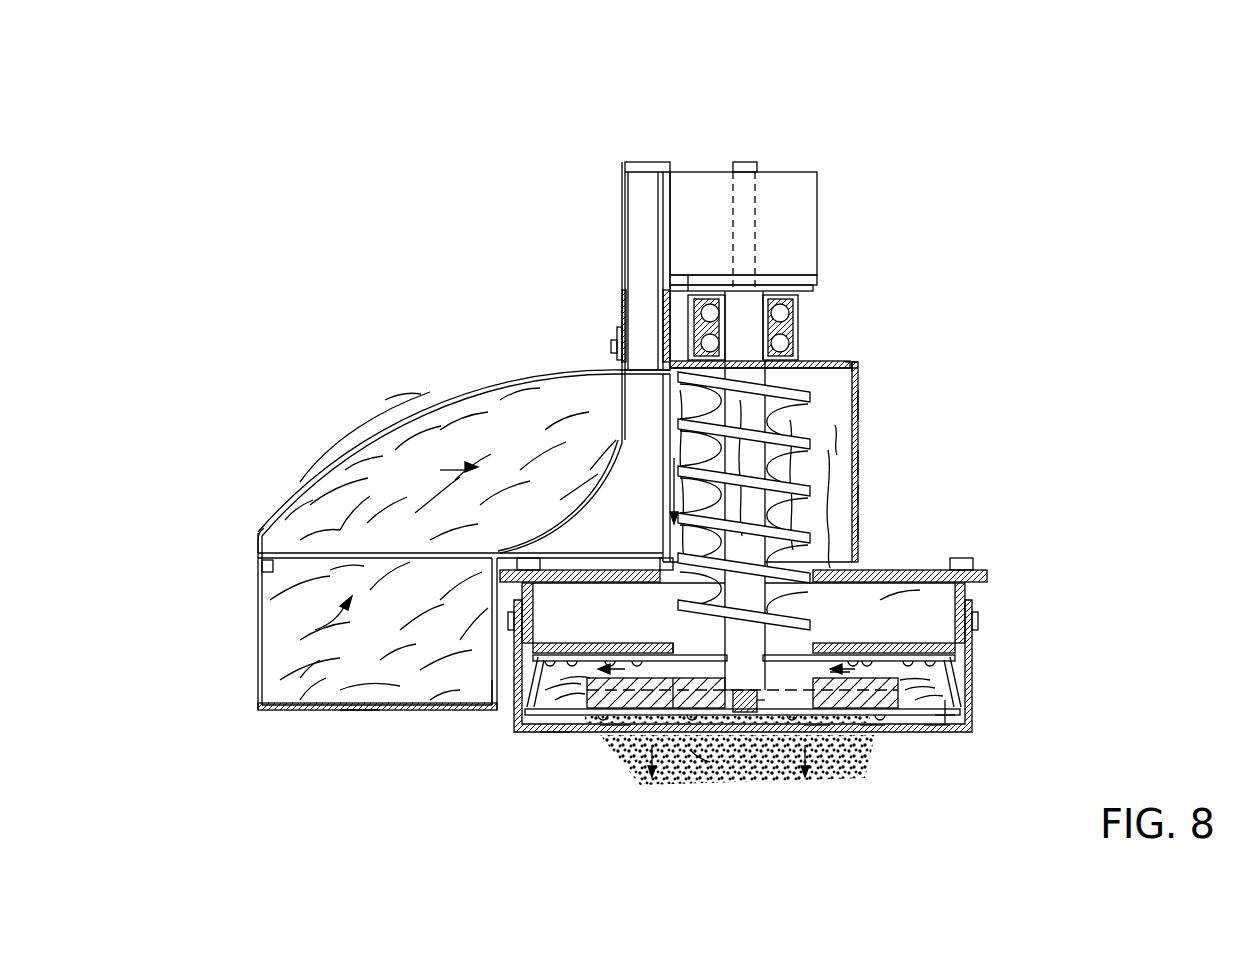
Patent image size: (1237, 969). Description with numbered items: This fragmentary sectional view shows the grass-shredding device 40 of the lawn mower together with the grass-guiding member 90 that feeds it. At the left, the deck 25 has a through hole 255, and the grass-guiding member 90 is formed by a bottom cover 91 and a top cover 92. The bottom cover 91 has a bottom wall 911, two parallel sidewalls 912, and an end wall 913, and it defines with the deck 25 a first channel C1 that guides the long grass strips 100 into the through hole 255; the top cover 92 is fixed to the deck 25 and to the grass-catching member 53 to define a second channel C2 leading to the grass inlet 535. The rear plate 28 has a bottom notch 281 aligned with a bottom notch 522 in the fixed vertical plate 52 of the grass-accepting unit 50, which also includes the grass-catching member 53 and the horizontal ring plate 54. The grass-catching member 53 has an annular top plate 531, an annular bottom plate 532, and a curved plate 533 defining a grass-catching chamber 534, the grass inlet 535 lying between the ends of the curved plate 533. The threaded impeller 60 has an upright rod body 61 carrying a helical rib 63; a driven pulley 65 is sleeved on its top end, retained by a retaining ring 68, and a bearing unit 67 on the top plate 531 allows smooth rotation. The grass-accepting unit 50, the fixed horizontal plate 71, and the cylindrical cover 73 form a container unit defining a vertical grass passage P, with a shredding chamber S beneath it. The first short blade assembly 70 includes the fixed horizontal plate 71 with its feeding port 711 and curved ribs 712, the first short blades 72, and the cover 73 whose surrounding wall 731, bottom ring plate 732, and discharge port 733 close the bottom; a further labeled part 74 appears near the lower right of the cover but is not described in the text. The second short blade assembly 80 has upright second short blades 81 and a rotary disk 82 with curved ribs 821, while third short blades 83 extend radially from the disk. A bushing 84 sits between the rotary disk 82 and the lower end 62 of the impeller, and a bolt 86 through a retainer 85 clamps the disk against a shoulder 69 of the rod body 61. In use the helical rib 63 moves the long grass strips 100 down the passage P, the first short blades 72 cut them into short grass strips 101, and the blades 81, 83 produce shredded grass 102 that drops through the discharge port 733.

The deck 25 is at (262, 572).
The rear plate 28 is at (622, 178).
The grass-shredding device 40 is at (988, 556).
The grass-accepting unit 50 is at (866, 380).
The fixed vertical plate 52 is at (668, 162).
The grass-catching member 53 is at (860, 404).
The horizontal ring plate 54 is at (985, 575).
The threaded impeller 60 is at (810, 378).
The rod body 61 is at (750, 345).
The lower end 62 is at (785, 690).
The helical rib 63 is at (845, 440).
The driven pulley 65 is at (818, 200).
The bearing unit 67 is at (800, 287).
The retaining ring 68 is at (757, 170).
The shoulder 69 is at (725, 700).
The first short blade assembly 70 is at (975, 600).
The fixed horizontal plate 71 is at (975, 614).
The first short blades 72 is at (888, 625).
The cylindrical cover 73 is at (975, 700).
The outlet plate 74 is at (948, 735).
The second short blade assembly 80 is at (935, 735).
The second short blades 81 is at (960, 703).
The rotary disk 82 is at (870, 735).
The third short blades 83 is at (975, 730).
The bushing 84 is at (815, 730).
The retainer 85 is at (760, 715).
The bolt 86 is at (745, 715).
The grass-guiding member 90 is at (278, 501).
The bottom cover 91 is at (322, 712).
The top cover 92 is at (345, 453).
The long grass strips 100 is at (420, 465).
The short grass strips 101 is at (905, 690).
The shredded grass 102 is at (703, 750).
The through hole 255 is at (450, 553).
The bottom notch 281 is at (620, 446).
The bottom notch 522 is at (624, 300).
The annular top plate 531 is at (863, 356).
The annular bottom plate 532 is at (855, 525).
The curved plate 533 is at (860, 495).
The grass-catching chamber 534 is at (860, 460).
The grass inlet 535 is at (663, 352).
The feeding port 711 is at (683, 700).
The curved ribs 712 is at (970, 646).
The surrounding wall 731 is at (975, 660).
The bottom ring plate 732 is at (555, 735).
The discharge port 733 is at (617, 735).
The curved ribs 821 is at (940, 735).
The bottom wall 911 is at (358, 712).
The sidewalls 912 is at (445, 692).
The end wall 913 is at (497, 690).
The first channel C1 is at (302, 680).
The second channel C2 is at (535, 432).
The grass passage P is at (850, 425).
The shredding chamber S is at (577, 735).